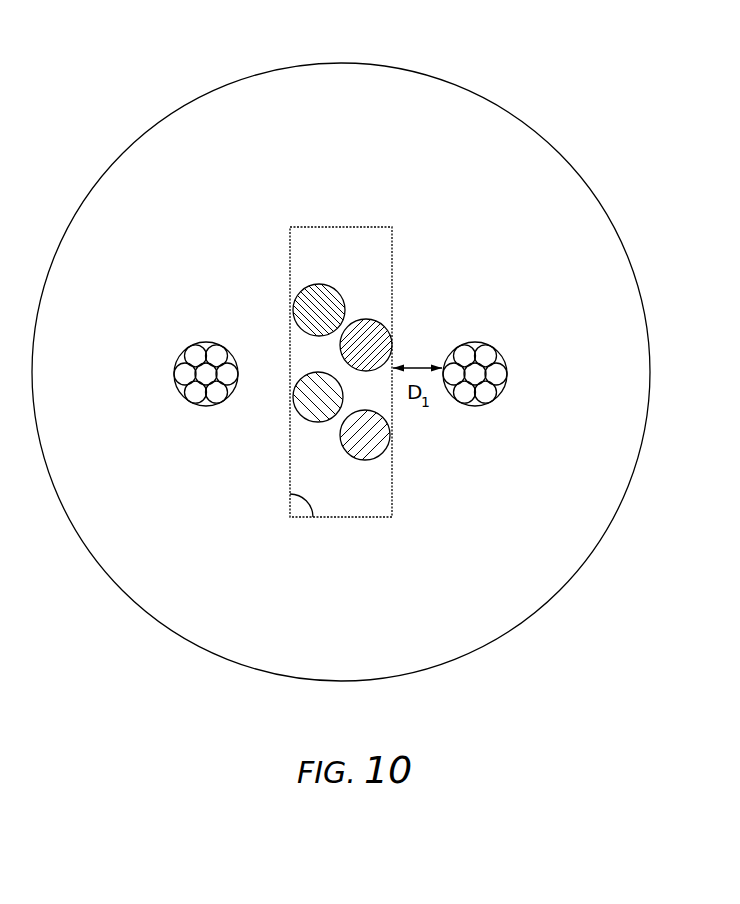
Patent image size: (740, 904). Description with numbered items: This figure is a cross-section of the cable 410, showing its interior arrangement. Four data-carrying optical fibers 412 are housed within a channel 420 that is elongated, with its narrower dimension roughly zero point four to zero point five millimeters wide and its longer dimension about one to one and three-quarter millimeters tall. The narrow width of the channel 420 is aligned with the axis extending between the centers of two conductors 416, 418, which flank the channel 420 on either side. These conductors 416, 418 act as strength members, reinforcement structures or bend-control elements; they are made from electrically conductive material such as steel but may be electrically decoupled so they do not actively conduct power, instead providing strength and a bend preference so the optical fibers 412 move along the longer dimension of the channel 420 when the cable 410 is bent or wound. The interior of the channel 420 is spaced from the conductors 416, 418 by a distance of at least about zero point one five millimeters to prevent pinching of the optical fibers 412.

The cable 410 is at (638, 90).
The optical fibers 412 is at (365, 329).
The conductor 416 is at (175, 365).
The conductor 418 is at (497, 375).
The channel 420 is at (288, 501).